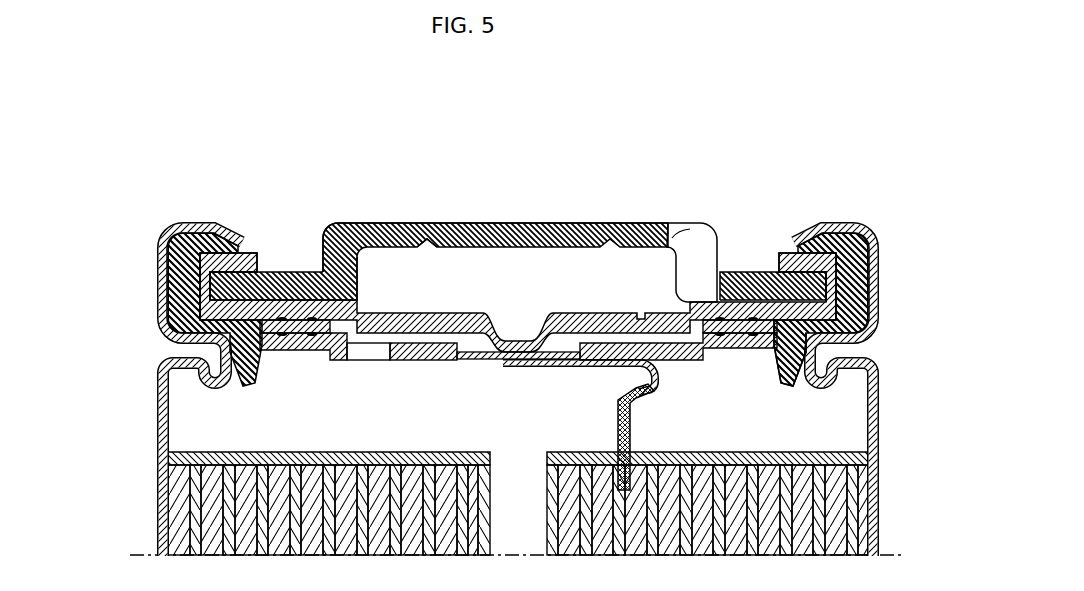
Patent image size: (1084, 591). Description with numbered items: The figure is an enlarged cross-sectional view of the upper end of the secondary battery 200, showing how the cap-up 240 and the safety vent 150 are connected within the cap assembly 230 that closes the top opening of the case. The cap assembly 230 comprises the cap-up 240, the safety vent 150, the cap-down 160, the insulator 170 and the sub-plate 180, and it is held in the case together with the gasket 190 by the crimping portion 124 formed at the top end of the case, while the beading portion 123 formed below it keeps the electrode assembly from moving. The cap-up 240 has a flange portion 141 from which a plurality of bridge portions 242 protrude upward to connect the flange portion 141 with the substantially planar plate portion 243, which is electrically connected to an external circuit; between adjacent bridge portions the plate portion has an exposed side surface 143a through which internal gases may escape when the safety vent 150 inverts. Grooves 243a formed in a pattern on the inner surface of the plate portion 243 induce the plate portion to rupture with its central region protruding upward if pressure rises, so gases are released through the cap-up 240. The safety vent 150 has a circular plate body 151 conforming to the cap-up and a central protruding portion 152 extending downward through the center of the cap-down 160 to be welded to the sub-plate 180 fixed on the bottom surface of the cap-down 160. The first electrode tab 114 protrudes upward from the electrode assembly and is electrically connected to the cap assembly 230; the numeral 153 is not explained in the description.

The secondary battery 200 is at (103, 163).
The cap assembly 230 is at (518, 253).
The cap-up 240 is at (488, 216).
The bridge portions 242 is at (312, 243).
The plate portion 243 is at (523, 224).
The grooves 243a is at (451, 240).
The safety vent 150 is at (610, 298).
The plate body 151 is at (818, 347).
The protruding portion 152 is at (519, 368).
The bent end portion 153 is at (800, 238).
The flange portion 141 is at (232, 283).
The exposed side surface 143a is at (697, 245).
The cap-down 160 is at (407, 352).
The insulator 170 is at (278, 283).
The sub-plate 180 is at (518, 245).
The gasket 190 is at (858, 284).
The first electrode tab 114 is at (631, 421).
The beading portion 123 is at (222, 358).
The crimping portion 124 is at (862, 222).